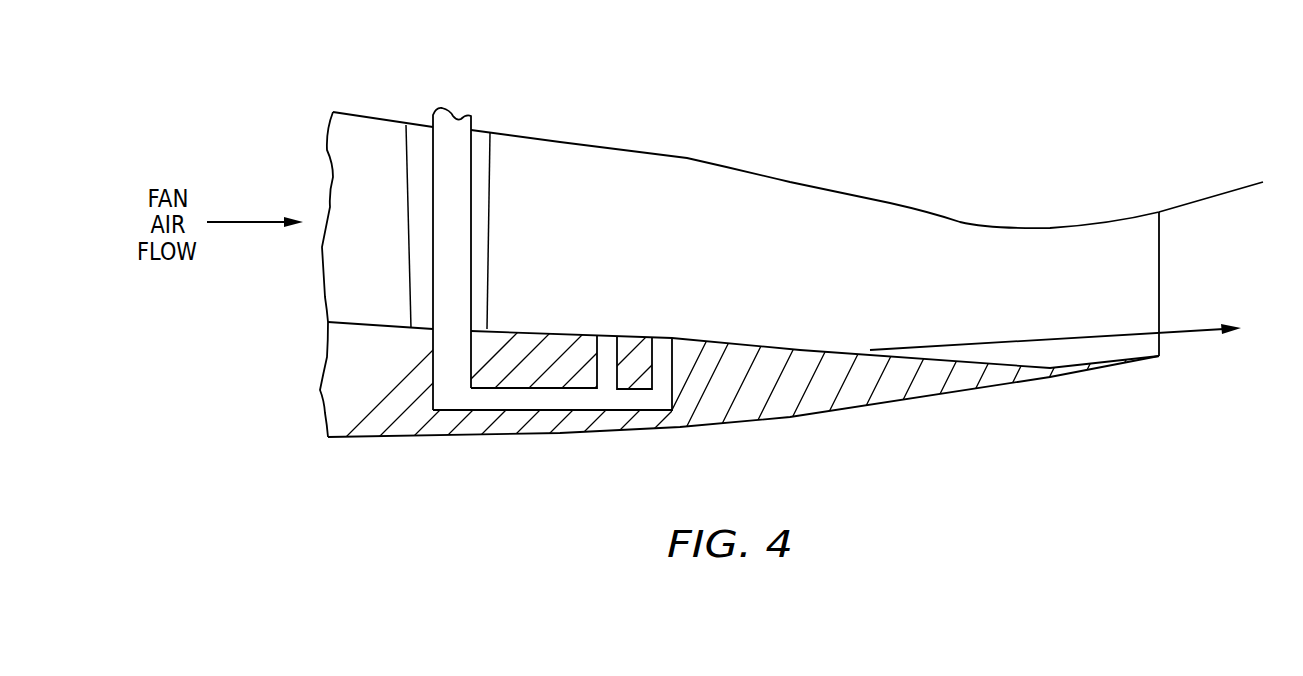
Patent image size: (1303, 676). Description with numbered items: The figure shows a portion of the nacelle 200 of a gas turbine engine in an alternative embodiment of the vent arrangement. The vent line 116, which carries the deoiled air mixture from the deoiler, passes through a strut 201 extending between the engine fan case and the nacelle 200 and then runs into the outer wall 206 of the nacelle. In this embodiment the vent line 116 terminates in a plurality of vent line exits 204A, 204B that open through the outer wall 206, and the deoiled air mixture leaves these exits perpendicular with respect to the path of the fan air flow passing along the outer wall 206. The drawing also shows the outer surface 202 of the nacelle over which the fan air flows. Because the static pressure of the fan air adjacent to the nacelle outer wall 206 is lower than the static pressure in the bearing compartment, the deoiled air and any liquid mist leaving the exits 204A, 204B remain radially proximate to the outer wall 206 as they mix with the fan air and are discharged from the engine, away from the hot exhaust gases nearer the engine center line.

The nacelle 200 is at (1008, 122).
The strut 201 is at (415, 167).
The outer skin 202 is at (623, 147).
The vent line 116 is at (462, 198).
The vent line exit 204A is at (608, 332).
The vent line exit 204B is at (662, 337).
The outer wall 206 is at (753, 340).